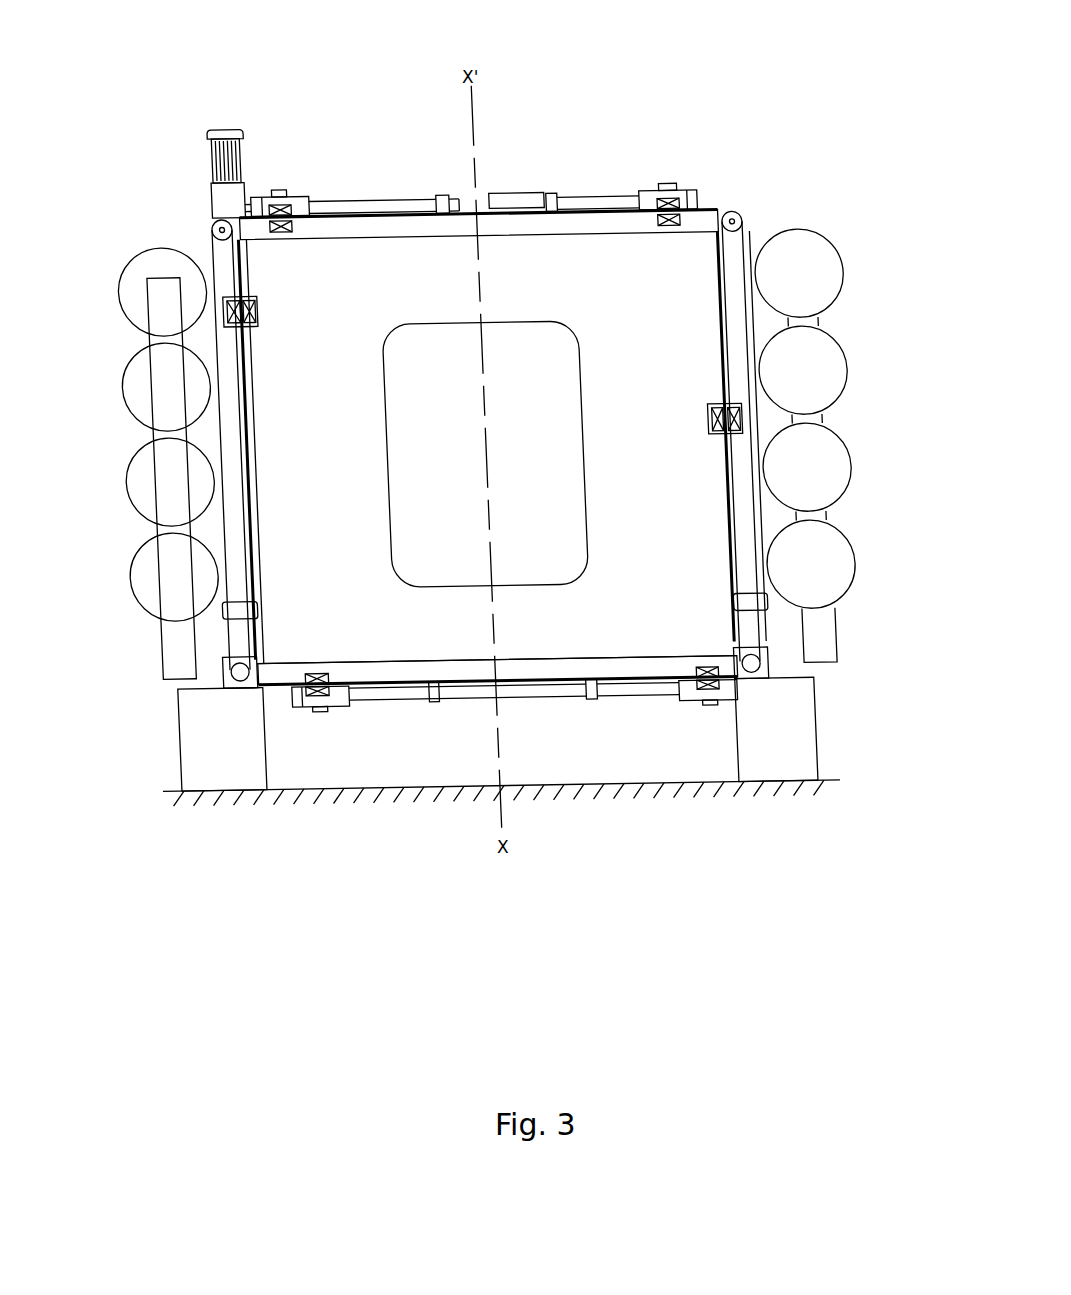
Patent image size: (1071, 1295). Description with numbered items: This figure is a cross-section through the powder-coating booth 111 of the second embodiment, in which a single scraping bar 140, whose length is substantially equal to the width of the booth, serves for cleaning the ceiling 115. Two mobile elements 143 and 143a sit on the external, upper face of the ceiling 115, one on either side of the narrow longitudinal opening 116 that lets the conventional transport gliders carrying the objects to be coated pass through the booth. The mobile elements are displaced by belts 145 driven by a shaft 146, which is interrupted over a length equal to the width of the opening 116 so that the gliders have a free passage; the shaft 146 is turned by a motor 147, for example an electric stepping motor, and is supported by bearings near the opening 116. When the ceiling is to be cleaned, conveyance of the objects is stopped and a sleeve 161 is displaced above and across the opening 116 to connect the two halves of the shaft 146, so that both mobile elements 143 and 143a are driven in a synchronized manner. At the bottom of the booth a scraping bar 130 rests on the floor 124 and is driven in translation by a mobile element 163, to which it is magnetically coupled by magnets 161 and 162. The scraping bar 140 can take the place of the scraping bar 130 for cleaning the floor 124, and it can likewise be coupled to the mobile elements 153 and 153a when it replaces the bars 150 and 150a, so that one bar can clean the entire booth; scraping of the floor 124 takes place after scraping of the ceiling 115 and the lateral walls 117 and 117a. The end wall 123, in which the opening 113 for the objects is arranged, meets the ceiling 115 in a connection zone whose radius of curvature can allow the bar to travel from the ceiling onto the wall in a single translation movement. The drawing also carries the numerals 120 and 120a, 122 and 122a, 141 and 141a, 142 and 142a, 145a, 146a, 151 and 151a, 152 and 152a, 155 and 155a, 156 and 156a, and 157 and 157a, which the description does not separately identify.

The booth 111 is at (591, 425).
The entrance opening 113 is at (485, 454).
The ceiling 115 is at (479, 155).
The opening 116 is at (483, 186).
The lateral wall 117 is at (238, 436).
The lateral wall 117a is at (716, 528).
The left roller stack 120 is at (140, 243).
The right roller stack 120a is at (815, 246).
The left support rod 122 is at (168, 662).
The right support rod 122a is at (818, 648).
The end wall 123 is at (488, 448).
The floor 124 is at (530, 672).
The scraping bar 130 is at (406, 668).
The scraping bar 140 is at (352, 232).
The left lower bearing 141 is at (283, 234).
The right lower bearing 141a is at (675, 230).
The motor 142 is at (236, 135).
The right slider block 142a is at (695, 196).
The mobile element 143 is at (304, 192).
The mobile element 143a is at (665, 144).
The belt 145 is at (271, 195).
The right slider cap 145a is at (679, 180).
The shaft 146 is at (412, 199).
The right screw rail 146a is at (575, 198).
The motor 147 is at (207, 167).
The bar 150 is at (257, 305).
The bar 150a is at (709, 408).
The left inner bearing block 151 is at (258, 313).
The right inner bearing block 151a is at (707, 421).
The left bearing 152 is at (228, 315).
The right bearing 152a is at (748, 426).
The mobile element 153 is at (227, 303).
The mobile element 153a is at (752, 409).
The left belt 155 is at (226, 512).
The right belt 155a is at (758, 527).
The left lower pulley housing 156 is at (222, 667).
The right lower pulley housing 156a is at (735, 651).
The left bracket 157 is at (224, 607).
The right bracket 157a is at (765, 603).
The sleeve 161 is at (524, 192).
The magnet 162 is at (282, 700).
The mobile element 163 is at (733, 695).